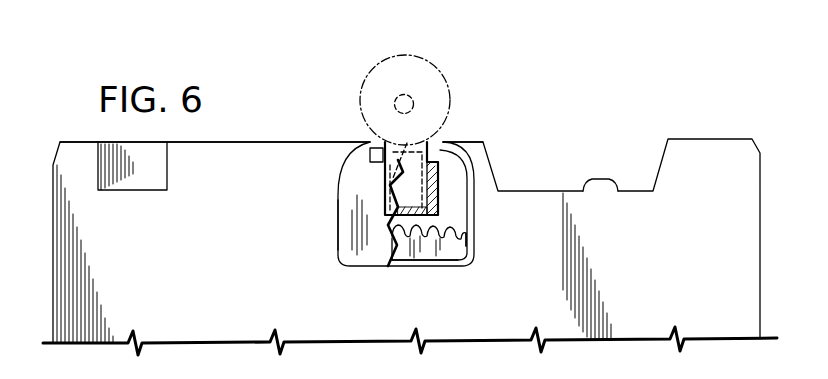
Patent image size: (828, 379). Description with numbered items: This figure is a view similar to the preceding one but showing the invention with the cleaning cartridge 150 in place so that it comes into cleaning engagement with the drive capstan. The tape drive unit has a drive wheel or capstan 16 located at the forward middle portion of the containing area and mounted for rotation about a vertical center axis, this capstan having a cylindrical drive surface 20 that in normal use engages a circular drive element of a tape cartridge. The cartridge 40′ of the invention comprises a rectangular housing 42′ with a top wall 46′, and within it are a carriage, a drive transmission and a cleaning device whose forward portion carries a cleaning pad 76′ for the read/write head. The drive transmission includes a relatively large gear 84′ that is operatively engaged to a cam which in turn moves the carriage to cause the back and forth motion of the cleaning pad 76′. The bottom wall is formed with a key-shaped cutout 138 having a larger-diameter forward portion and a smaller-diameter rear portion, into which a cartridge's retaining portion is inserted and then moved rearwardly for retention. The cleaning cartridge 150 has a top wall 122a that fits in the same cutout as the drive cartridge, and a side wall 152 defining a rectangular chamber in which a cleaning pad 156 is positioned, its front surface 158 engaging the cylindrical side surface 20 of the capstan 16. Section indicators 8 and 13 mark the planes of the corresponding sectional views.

The cylindrical drive surface 20 is at (437, 67).
The drive wheel or capstan 16 is at (443, 78).
The front surface 158 is at (407, 143).
The cleaning pad 156 is at (432, 143).
The key-shaped cutout 138 is at (438, 180).
The cartridge 40′ is at (322, 128).
The housing 42′ is at (306, 134).
The cleaning pad 76′ is at (602, 180).
The top wall 46′ is at (628, 257).
The side wall 152 is at (438, 197).
The gear 84′ is at (448, 258).
The top wall 122a is at (346, 226).
The cleaning cartridge 150 is at (336, 256).
The section line for FIG. 8 is at (295, 170).
The section line for FIG. 13 is at (403, 10).